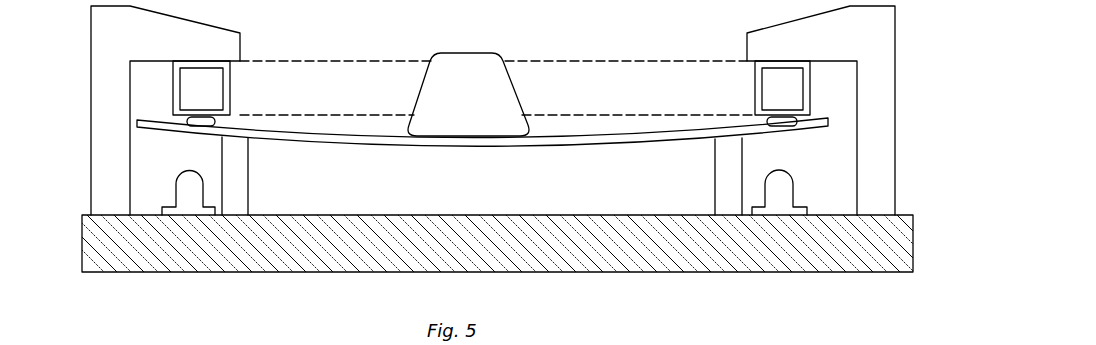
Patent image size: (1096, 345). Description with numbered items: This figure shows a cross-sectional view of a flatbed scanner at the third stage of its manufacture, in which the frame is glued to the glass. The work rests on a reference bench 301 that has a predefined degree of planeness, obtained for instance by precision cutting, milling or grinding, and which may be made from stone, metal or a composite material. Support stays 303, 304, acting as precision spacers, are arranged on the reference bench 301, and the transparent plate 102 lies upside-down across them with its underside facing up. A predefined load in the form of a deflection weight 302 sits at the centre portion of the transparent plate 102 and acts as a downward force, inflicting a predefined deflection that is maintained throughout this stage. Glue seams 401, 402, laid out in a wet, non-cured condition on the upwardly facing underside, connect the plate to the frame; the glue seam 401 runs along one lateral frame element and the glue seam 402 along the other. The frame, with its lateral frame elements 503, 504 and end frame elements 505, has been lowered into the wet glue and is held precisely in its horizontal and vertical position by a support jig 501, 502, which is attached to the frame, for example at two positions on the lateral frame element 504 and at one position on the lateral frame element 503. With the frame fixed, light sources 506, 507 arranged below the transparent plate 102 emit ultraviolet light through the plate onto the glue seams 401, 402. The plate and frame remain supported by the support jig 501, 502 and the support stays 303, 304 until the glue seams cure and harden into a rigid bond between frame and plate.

The transparent plate 102 is at (577, 148).
The reference bench 301 is at (197, 272).
The deflection weight 302 is at (468, 94).
The support stay 303 is at (250, 160).
The support stay 304 is at (715, 160).
The glue seam 401 is at (766, 122).
The glue seam 402 is at (216, 120).
The support jig 501 is at (91, 77).
The support jig 502 is at (808, 18).
The lateral frame element 503 is at (755, 100).
The lateral frame element 504 is at (231, 101).
The end frame element 505 is at (397, 60).
The light source 506 is at (807, 153).
The light source 507 is at (176, 197).